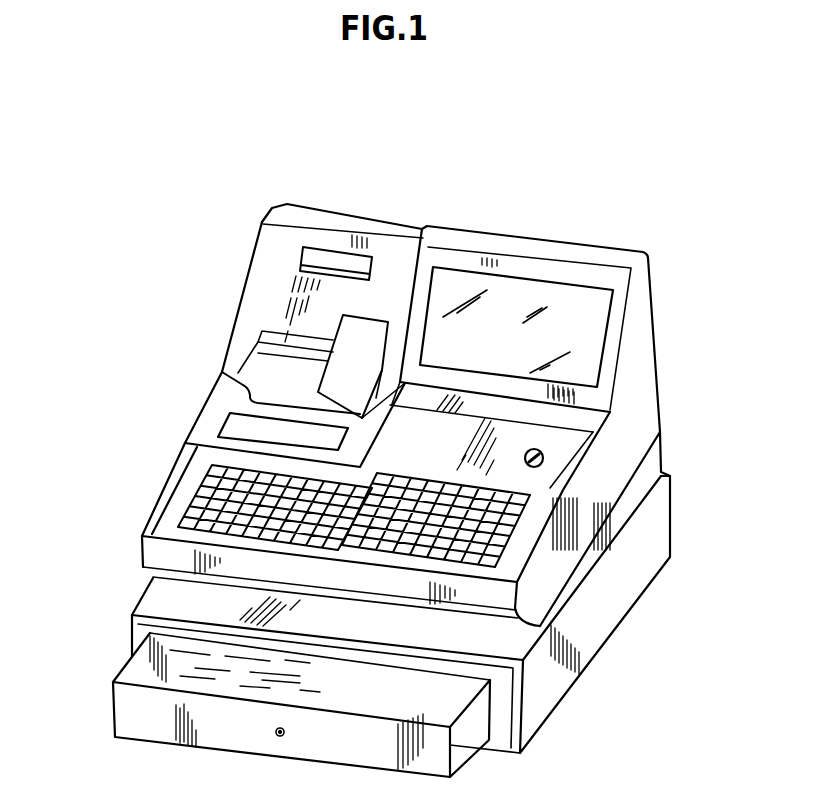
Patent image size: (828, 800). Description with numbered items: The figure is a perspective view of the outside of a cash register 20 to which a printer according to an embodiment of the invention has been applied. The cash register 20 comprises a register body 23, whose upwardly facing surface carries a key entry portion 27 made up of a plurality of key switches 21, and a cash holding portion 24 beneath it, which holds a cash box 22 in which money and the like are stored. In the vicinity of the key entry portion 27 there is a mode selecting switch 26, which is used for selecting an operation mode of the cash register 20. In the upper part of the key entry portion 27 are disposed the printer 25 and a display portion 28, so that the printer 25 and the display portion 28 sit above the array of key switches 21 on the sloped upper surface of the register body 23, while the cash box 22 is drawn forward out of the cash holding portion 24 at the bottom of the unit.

The cash register 20 is at (210, 227).
The key switches 21 is at (187, 490).
The cash box 22 is at (132, 663).
The register body 23 is at (635, 397).
The cash holding portion 24 is at (613, 590).
The printer 25 is at (247, 340).
The mode selecting switch 26 is at (545, 455).
The key entry portion 27 is at (550, 489).
The display portion 28 is at (587, 334).